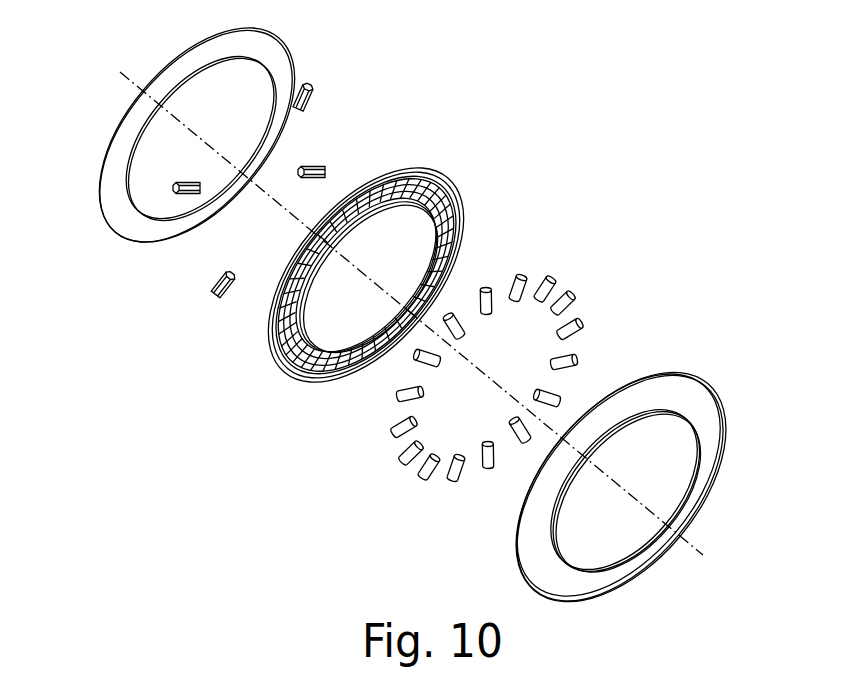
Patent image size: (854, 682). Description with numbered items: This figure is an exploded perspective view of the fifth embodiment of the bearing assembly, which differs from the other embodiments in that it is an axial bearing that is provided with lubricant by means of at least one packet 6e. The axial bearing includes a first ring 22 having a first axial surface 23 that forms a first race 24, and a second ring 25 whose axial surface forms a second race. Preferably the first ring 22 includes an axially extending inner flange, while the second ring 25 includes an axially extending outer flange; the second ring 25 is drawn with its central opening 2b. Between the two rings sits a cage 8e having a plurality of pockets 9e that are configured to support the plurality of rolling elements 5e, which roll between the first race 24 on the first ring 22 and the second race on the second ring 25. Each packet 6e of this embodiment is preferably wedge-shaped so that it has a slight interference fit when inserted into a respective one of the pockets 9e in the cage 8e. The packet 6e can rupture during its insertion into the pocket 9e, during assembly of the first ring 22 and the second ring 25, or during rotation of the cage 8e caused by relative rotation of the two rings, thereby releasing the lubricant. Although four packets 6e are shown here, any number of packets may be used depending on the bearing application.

The first ring 22 is at (169, 152).
The first axial surface 23 is at (115, 182).
The first race 24 is at (137, 117).
The packet 6e is at (313, 98).
The cage 8e is at (369, 278).
The pocket 9e is at (285, 365).
The rolling element 5e is at (565, 295).
The second ring 25 is at (647, 487).
The bore of second washer 2b is at (637, 540).